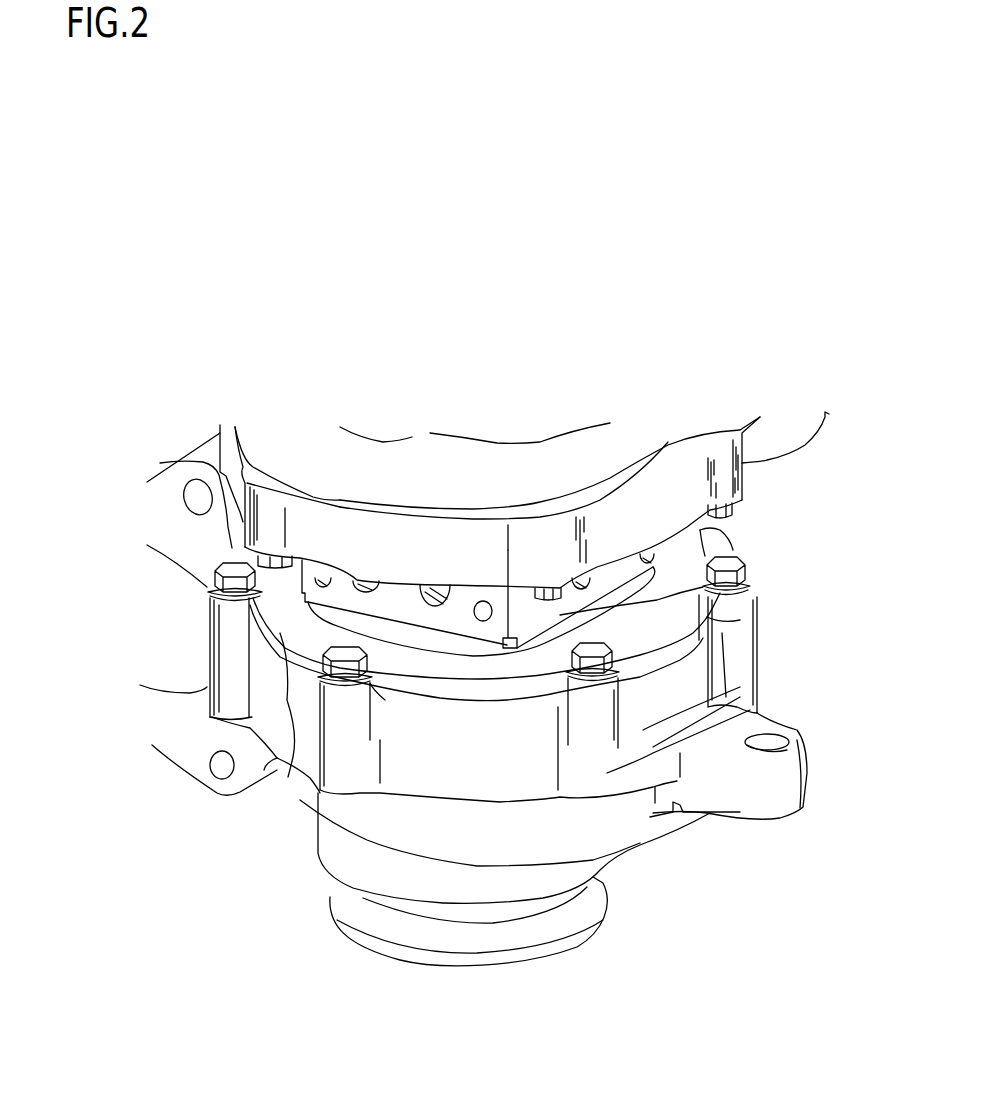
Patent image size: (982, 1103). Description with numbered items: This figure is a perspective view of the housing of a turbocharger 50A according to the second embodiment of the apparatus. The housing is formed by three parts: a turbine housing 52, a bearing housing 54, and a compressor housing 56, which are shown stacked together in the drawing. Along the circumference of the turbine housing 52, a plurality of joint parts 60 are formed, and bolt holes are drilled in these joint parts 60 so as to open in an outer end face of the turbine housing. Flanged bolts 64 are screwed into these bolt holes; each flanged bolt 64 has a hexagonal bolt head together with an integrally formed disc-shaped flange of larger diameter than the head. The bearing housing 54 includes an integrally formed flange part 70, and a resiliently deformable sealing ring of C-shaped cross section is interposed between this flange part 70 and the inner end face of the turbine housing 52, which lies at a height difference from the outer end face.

The compressor housing 56 is at (746, 473).
The turbocharger 50A is at (793, 570).
The bearing housing 54 is at (700, 606).
The joint parts 60 is at (757, 640).
The turbine housing 52 is at (762, 695).
The flanged bolts 64 is at (343, 676).
The flange part 70 is at (288, 777).